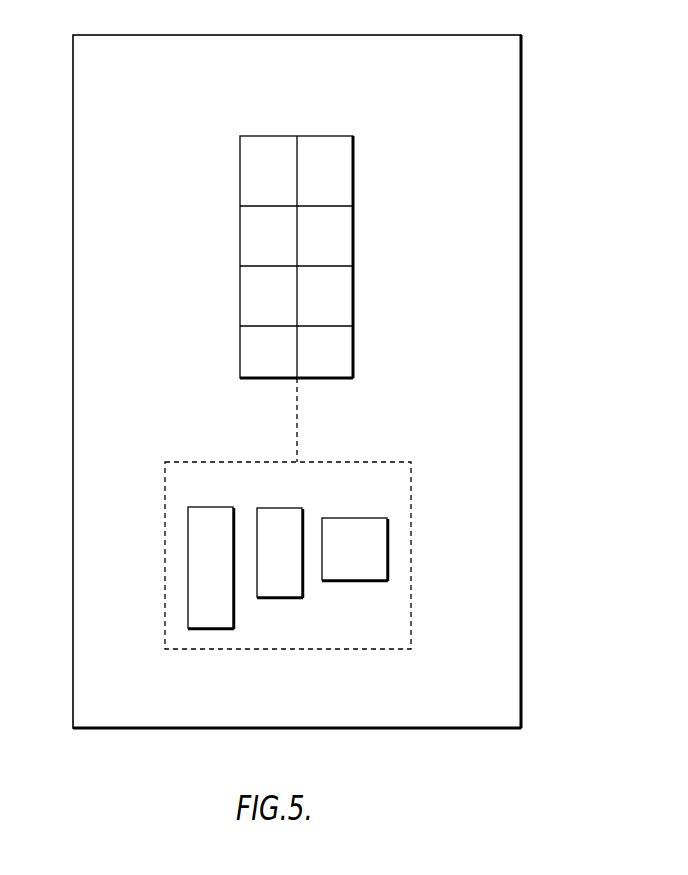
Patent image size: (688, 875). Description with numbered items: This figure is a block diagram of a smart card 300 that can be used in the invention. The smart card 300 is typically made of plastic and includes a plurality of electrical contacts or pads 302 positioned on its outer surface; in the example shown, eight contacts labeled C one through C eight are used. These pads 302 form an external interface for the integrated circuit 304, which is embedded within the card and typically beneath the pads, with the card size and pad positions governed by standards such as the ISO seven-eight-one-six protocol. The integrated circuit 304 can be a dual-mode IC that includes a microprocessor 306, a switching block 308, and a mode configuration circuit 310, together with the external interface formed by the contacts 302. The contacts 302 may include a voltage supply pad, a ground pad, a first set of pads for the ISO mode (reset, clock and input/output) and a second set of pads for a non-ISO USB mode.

The smart card 300 is at (530, 161).
The electrical contacts or pads 302 is at (354, 167).
The integrated circuit 304 is at (411, 505).
The microprocessor 306 is at (388, 540).
The switching block 308 is at (275, 598).
The mode configuration circuit 310 is at (188, 555).